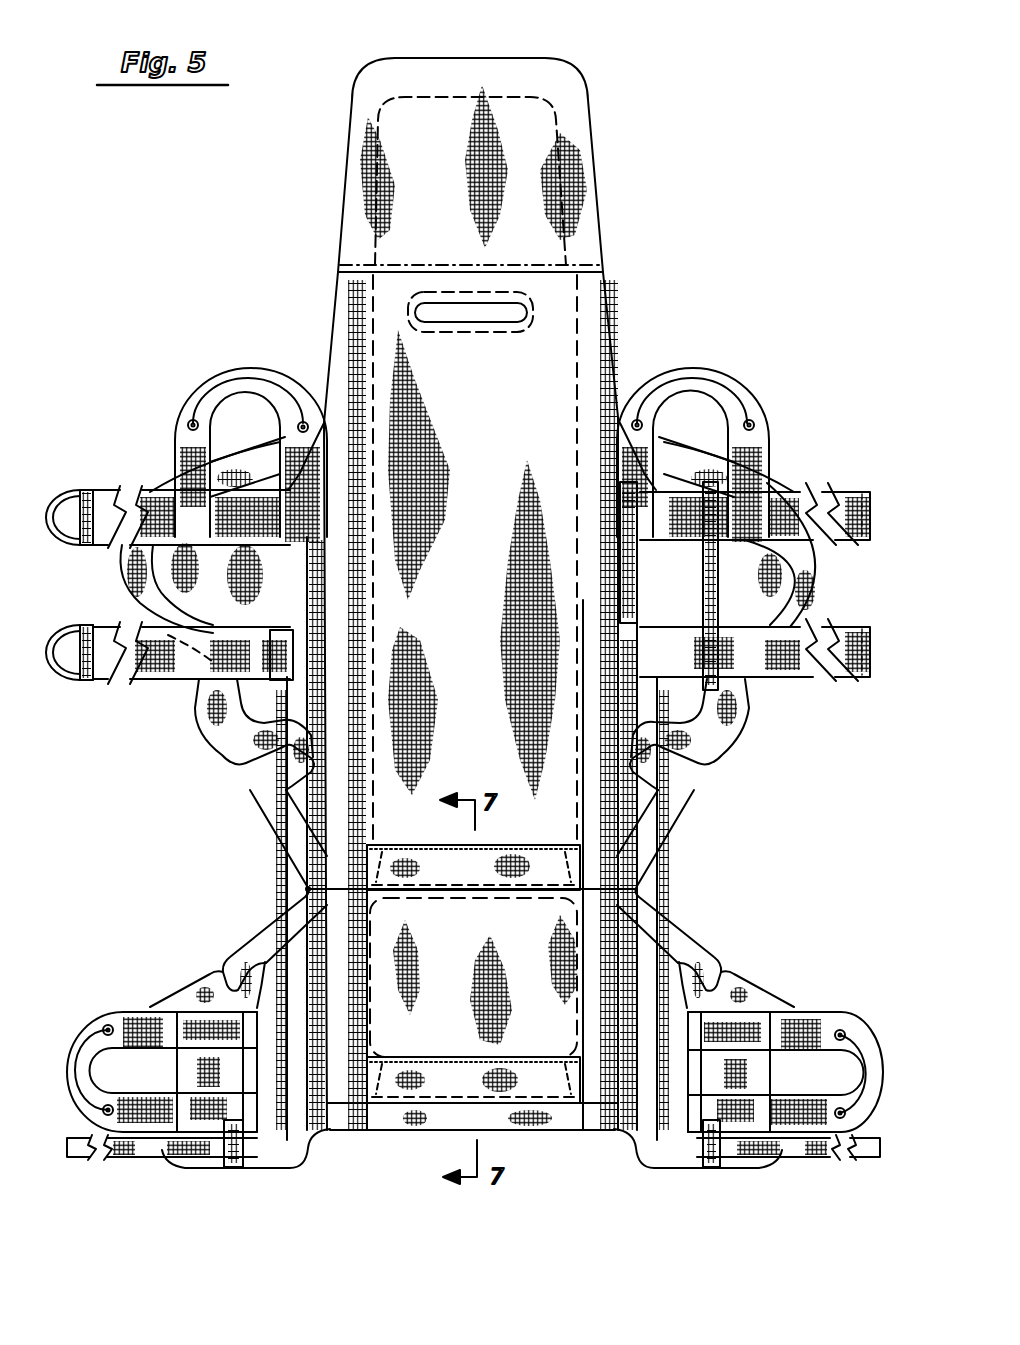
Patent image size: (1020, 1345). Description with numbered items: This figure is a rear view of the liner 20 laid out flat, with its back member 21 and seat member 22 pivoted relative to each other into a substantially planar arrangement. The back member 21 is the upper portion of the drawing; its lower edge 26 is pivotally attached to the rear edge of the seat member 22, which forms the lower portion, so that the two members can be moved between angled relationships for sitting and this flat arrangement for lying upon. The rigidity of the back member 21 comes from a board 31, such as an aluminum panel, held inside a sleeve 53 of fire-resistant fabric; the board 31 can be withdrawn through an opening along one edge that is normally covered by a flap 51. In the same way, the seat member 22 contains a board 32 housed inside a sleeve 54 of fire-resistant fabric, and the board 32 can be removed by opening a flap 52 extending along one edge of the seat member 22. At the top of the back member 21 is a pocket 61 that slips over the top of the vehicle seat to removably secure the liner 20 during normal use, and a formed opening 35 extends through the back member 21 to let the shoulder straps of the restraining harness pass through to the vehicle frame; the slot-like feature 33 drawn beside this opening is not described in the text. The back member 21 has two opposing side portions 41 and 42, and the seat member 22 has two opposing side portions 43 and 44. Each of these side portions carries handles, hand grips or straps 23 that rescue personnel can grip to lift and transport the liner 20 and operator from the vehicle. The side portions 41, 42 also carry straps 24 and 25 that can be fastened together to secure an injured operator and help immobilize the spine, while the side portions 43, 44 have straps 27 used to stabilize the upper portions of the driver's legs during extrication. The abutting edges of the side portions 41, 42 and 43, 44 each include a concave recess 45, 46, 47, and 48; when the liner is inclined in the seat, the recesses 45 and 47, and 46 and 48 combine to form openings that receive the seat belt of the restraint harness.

The liner 20 is at (622, 134).
The back member 21 is at (347, 323).
The seat member 22 is at (403, 1037).
The handles, hand grips or straps 23 is at (207, 387).
The strap 24 is at (80, 540).
The strap 25 is at (866, 538).
The lower edge of the back member 26 is at (308, 889).
The straps 27 is at (137, 1157).
The board 31 is at (455, 97).
The board 32 is at (437, 900).
The hand slot 33 is at (463, 335).
The formed opening 35 is at (505, 313).
The side portion 41 is at (707, 703).
The side portion 42 is at (207, 722).
The side portion 43 is at (687, 937).
The side portion 44 is at (263, 940).
The concave recess 45 is at (685, 768).
The concave recess 46 is at (253, 763).
The concave recess 47 is at (725, 978).
The concave recess 48 is at (227, 980).
The flap 51 is at (537, 857).
The flap 52 is at (545, 1080).
The sleeve 53 is at (473, 630).
The sleeve 54 is at (467, 958).
The pocket 61 is at (425, 142).